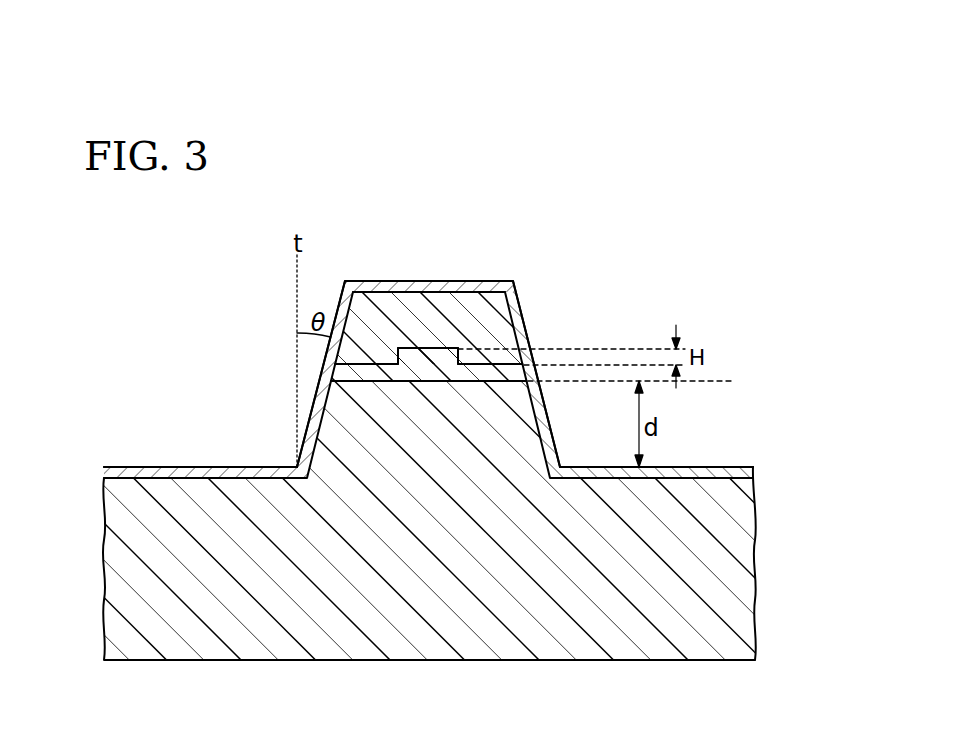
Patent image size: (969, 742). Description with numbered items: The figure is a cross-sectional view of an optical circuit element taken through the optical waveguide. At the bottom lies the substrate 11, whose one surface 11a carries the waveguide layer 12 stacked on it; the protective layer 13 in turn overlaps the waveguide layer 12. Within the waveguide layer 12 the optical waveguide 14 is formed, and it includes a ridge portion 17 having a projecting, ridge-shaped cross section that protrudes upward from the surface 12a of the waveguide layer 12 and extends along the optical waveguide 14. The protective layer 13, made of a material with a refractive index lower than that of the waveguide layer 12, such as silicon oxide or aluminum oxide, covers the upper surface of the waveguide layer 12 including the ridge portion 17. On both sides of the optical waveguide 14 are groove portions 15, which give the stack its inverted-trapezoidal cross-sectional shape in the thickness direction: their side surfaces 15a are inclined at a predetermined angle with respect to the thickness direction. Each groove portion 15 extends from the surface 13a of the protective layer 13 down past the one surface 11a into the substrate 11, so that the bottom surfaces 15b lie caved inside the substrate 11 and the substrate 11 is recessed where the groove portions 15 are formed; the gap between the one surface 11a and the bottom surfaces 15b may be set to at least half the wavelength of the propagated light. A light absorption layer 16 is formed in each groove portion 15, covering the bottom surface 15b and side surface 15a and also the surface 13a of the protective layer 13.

The substrate 11 is at (722, 565).
The one surface of the substrate 11a is at (733, 381).
The waveguide layer 12 is at (338, 370).
The surface of the waveguide layer 12a is at (382, 362).
The protective layer 13 is at (503, 318).
The surface of the protective layer 13a is at (487, 293).
The optical waveguide 14 is at (435, 383).
The groove portion 15 is at (200, 317).
The side surface of the groove portion 15a is at (344, 311).
The bottom surface of the groove portion 15b is at (150, 473).
The light absorption layer 16 is at (425, 288).
The ridge portion 17 is at (433, 352).